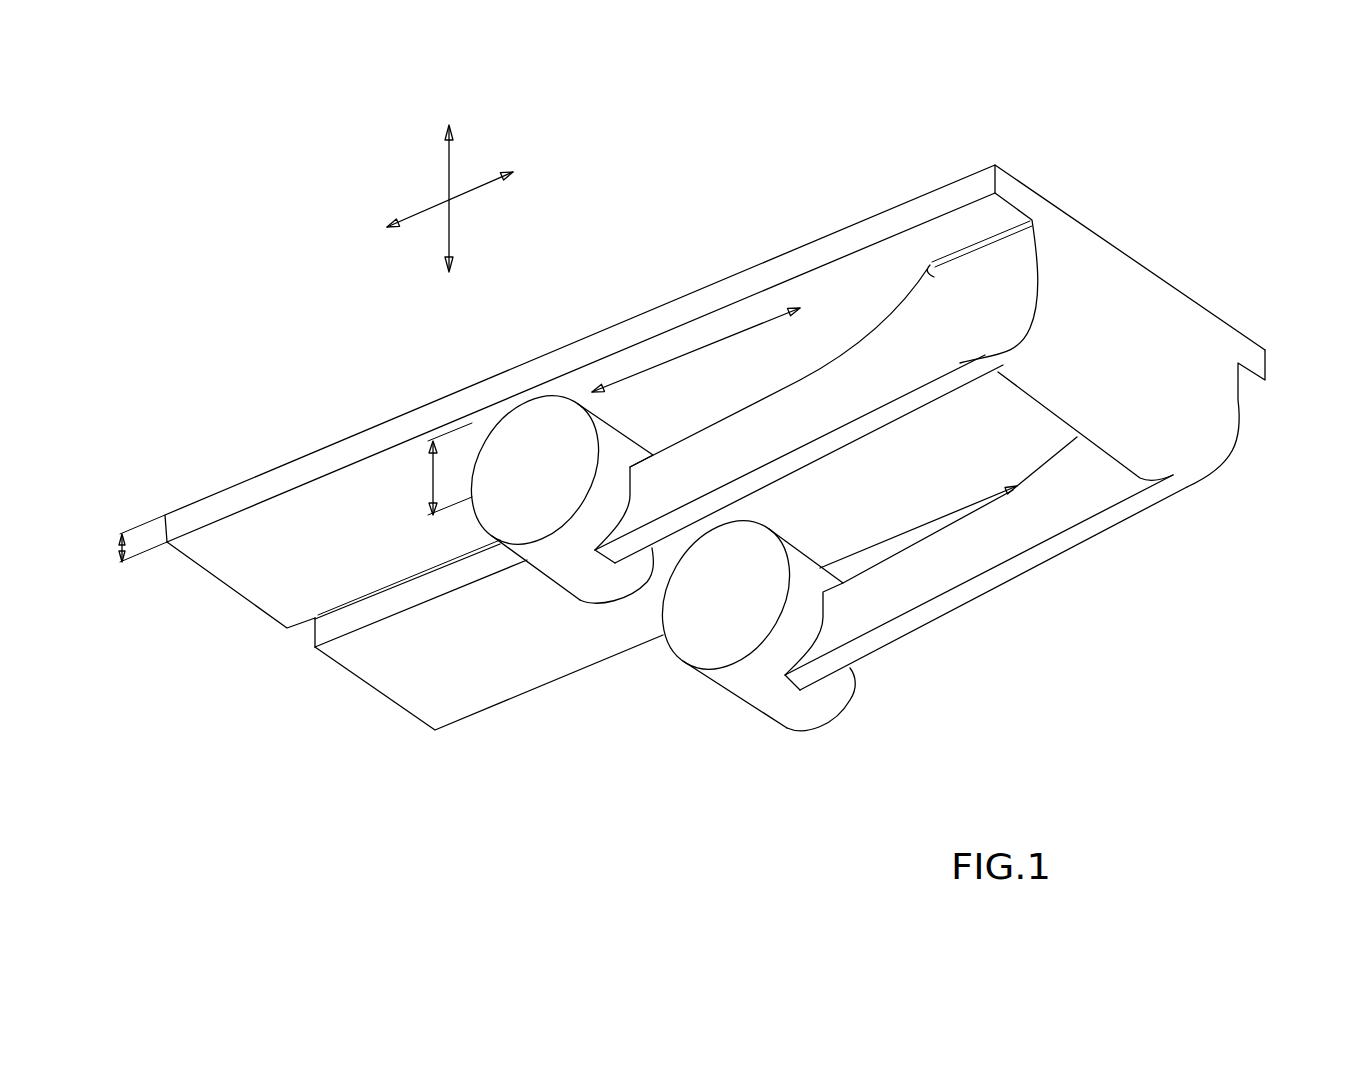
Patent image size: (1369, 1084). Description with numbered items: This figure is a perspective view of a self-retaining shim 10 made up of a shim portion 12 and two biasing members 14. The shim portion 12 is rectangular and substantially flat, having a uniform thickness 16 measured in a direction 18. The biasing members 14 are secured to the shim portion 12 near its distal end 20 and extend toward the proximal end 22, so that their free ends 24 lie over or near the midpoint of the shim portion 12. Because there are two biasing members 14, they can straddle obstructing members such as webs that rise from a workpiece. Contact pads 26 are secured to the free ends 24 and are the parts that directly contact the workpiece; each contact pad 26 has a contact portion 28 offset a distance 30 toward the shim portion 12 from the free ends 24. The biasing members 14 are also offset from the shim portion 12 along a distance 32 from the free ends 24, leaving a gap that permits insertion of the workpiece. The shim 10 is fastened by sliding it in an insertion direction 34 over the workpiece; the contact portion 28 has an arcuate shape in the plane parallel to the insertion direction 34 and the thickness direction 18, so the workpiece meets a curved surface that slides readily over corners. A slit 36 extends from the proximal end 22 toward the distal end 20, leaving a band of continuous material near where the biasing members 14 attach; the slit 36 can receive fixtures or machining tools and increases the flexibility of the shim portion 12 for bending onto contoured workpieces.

The self-retaining shim 10 is at (152, 329).
The shim portion 12 is at (268, 575).
The biasing members 14 is at (932, 388).
The uniform thickness 16 is at (123, 553).
The direction 18 is at (448, 180).
The distal end 20 is at (1294, 491).
The proximal end 22 is at (258, 766).
The free ends 24 is at (651, 546).
The contact pads 26 is at (773, 698).
The contact portion 28 is at (522, 394).
The distance 30 is at (428, 478).
The distance 32 is at (678, 345).
The insertion direction 34 is at (430, 210).
The slit 36 is at (385, 603).